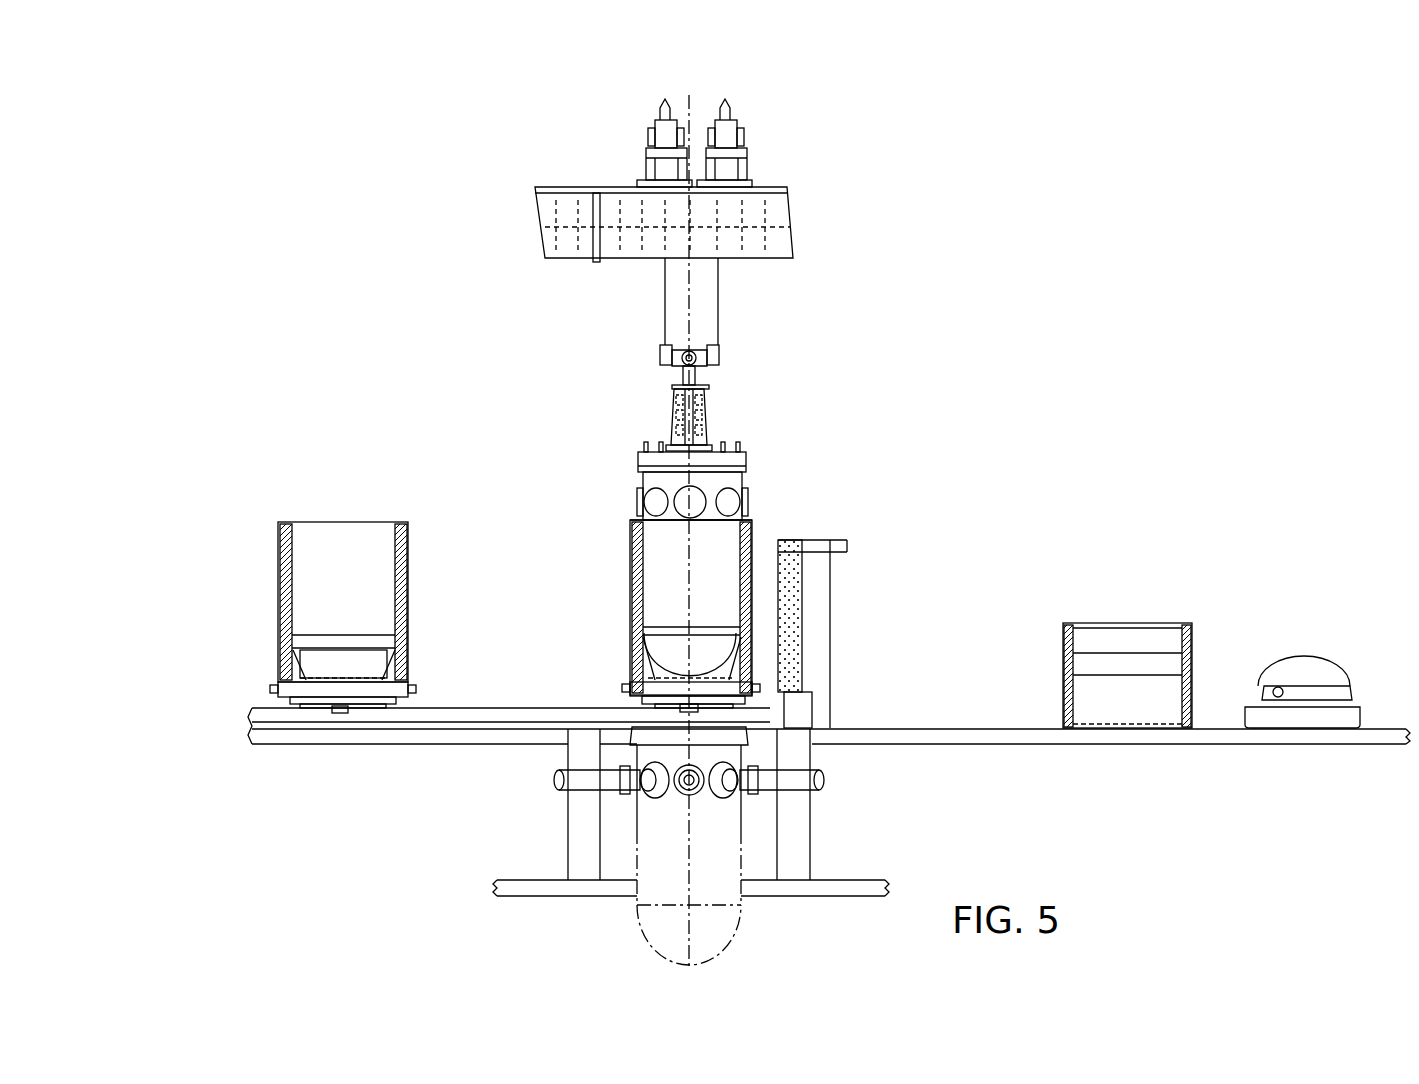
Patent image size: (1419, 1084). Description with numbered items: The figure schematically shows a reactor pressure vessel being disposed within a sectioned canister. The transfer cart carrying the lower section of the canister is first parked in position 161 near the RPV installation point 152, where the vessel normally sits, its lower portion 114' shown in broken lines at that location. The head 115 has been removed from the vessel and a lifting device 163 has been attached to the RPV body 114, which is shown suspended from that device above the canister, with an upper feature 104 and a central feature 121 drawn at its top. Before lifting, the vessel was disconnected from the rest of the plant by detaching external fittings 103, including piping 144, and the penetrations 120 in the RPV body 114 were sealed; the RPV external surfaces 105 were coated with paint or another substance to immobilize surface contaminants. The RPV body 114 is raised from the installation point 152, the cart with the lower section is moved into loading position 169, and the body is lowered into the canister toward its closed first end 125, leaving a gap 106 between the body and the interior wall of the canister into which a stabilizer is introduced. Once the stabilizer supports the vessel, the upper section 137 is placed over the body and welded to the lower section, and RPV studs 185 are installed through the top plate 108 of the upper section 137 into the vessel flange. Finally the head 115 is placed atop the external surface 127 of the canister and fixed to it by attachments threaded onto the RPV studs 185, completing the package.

The external fittings 103 is at (757, 812).
The cask cover 104 is at (638, 496).
The RPV external surfaces 105 is at (738, 581).
The gap 106 is at (753, 634).
The top plate 108 is at (1153, 650).
The RPV body 114 is at (668, 605).
The lower cask portion 114' is at (730, 846).
The head 115 is at (1310, 670).
The penetrations 120 is at (748, 458).
The center trunnion 121 is at (686, 497).
The first end 125 is at (372, 660).
The external surface 127 is at (1103, 650).
The upper section 137 is at (1193, 667).
The piping 144 is at (793, 783).
The RPV installation point 152 is at (727, 847).
The position 161 is at (346, 551).
The lifting device 163 is at (742, 313).
The loading position 169 is at (719, 395).
The RPV studs 185 is at (647, 442).